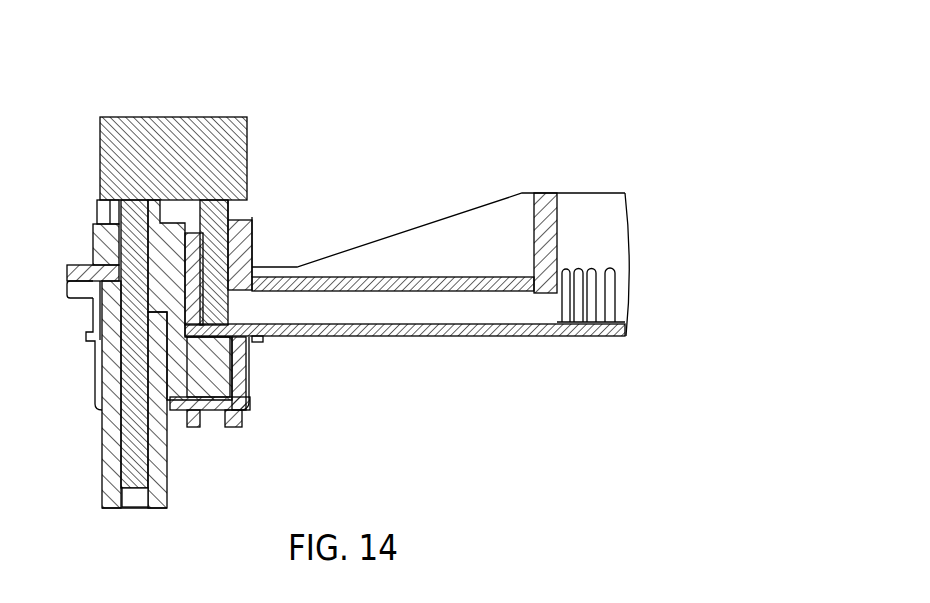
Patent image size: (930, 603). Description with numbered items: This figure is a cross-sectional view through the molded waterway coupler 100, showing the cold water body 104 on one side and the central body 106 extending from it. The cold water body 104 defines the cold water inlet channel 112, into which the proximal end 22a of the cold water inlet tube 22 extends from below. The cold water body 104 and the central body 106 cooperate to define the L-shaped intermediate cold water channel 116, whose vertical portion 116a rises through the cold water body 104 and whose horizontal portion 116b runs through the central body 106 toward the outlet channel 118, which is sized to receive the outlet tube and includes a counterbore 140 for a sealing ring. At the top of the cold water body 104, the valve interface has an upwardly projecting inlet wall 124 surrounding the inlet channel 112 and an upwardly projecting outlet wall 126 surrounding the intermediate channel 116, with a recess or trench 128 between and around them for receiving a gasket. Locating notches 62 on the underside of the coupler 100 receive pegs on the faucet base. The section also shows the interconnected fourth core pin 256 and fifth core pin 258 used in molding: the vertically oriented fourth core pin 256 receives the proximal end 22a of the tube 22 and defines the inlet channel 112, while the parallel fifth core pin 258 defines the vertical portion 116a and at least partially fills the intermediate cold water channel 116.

The coupler 100 is at (573, 40).
The cold water inlet tube 22 is at (103, 493).
The proximal end of cold water inlet tube 22a is at (77, 413).
The locating notches 62 is at (206, 428).
The cold water body 104 is at (92, 318).
The central body 106 is at (507, 337).
The cold water inlet channel 112 is at (68, 288).
The intermediate cold water channel 116 is at (395, 307).
The vertical portion of intermediate cold water channel 116a is at (214, 272).
The horizontal portion of intermediate cold water channel 116b is at (447, 306).
The outlet channel 118 is at (598, 178).
The inlet wall 124 is at (107, 208).
The outlet wall 126 is at (250, 199).
The recess or trench 128 is at (253, 221).
The counterbore 140 is at (559, 192).
The fourth core pin 256 is at (135, 490).
The fifth core pin 258 is at (230, 318).